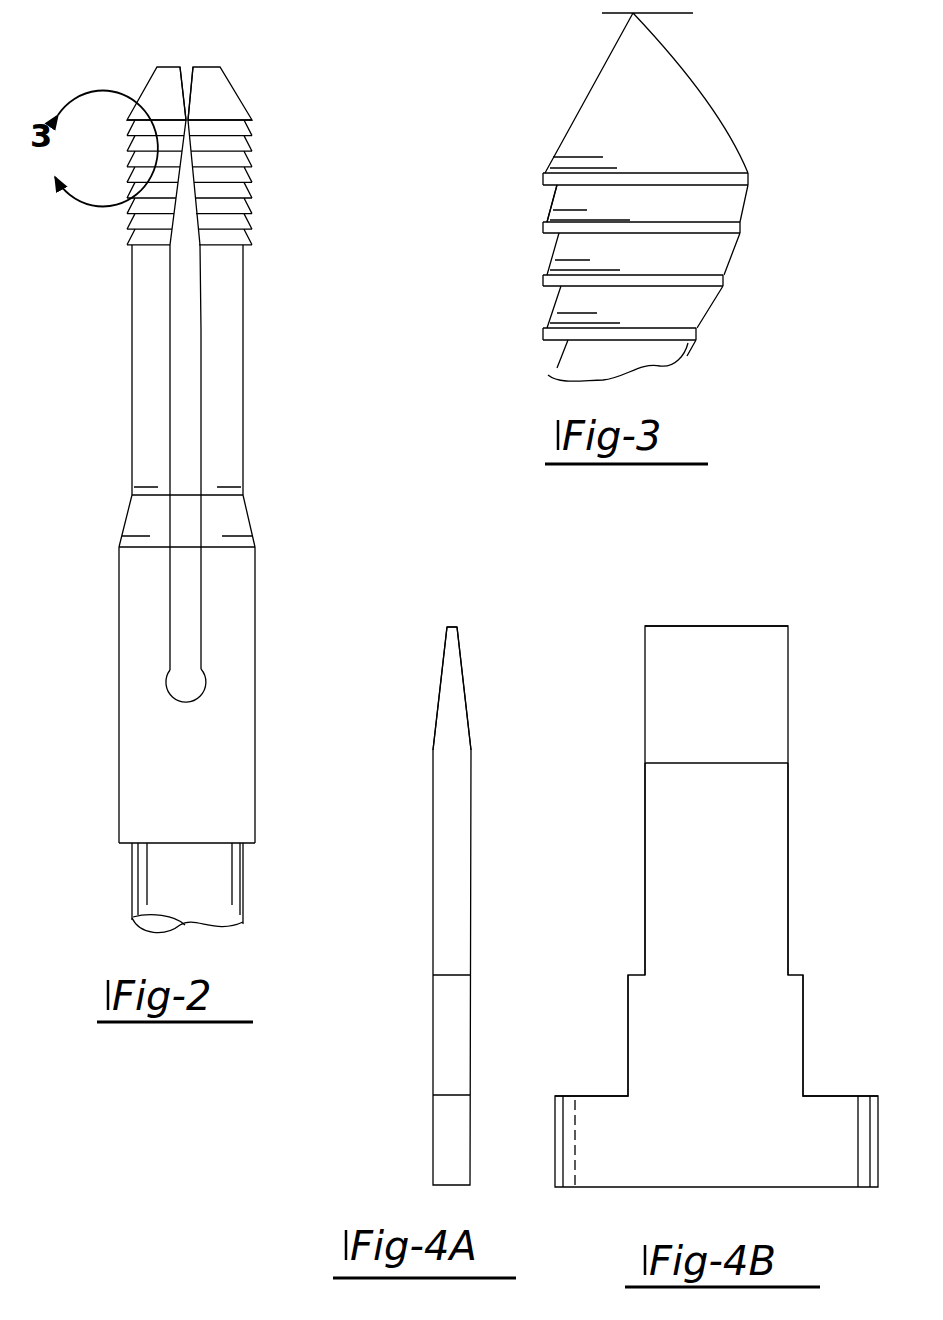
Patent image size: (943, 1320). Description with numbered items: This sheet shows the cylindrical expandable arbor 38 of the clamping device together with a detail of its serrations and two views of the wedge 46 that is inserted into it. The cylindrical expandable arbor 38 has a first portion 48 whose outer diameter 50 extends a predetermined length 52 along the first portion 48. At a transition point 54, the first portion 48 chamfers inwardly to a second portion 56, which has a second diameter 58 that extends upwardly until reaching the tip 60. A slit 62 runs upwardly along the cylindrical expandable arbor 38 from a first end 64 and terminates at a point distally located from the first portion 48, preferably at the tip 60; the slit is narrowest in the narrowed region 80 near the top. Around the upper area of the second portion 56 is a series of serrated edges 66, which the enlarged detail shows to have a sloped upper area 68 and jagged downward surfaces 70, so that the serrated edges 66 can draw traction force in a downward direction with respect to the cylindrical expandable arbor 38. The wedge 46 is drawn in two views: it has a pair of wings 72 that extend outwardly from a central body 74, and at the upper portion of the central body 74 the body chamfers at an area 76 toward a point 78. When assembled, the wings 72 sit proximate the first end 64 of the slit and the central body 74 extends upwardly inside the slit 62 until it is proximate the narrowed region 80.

In FIG. 2, the cylindrical expandable arbor 38 is at (302, 652).
In FIG. 4A, the wedge 46 is at (424, 833).
In FIG. 4B, the wedge 46 is at (630, 852).
In FIG. 2, the first portion 48 is at (228, 762).
In FIG. 2, the outer diameter 50 is at (252, 806).
In FIG. 2, the predetermined length 52 is at (63, 547).
In FIG. 2, the transition point 54 is at (119, 547).
In FIG. 2, the second portion 56 is at (230, 412).
In FIG. 2, the second diameter 58 is at (92, 346).
In FIG. 2, the tip 60 is at (225, 108).
In FIG. 2, the slit 62 is at (220, 618).
In FIG. 2, the first end 64 is at (206, 678).
In FIG. 2, the serrated edges 66 is at (245, 168).
In FIG. 3, the serrated edges 66 is at (538, 156).
In FIG. 3, the sloped upper area 68 is at (575, 118).
In FIG. 3, the jagged downward surfaces 70 is at (548, 192).
In FIG. 4B, the wings 72 is at (598, 1095).
In FIG. 4B, the central body 74 is at (752, 866).
In FIG. 4A, the chamfer area 76 is at (452, 675).
In FIG. 4B, the chamfer area 76 is at (668, 692).
In FIG. 4A, the point 78 is at (452, 626).
In FIG. 4B, the point 78 is at (733, 626).
In FIG. 2, the narrowed region 80 is at (128, 157).